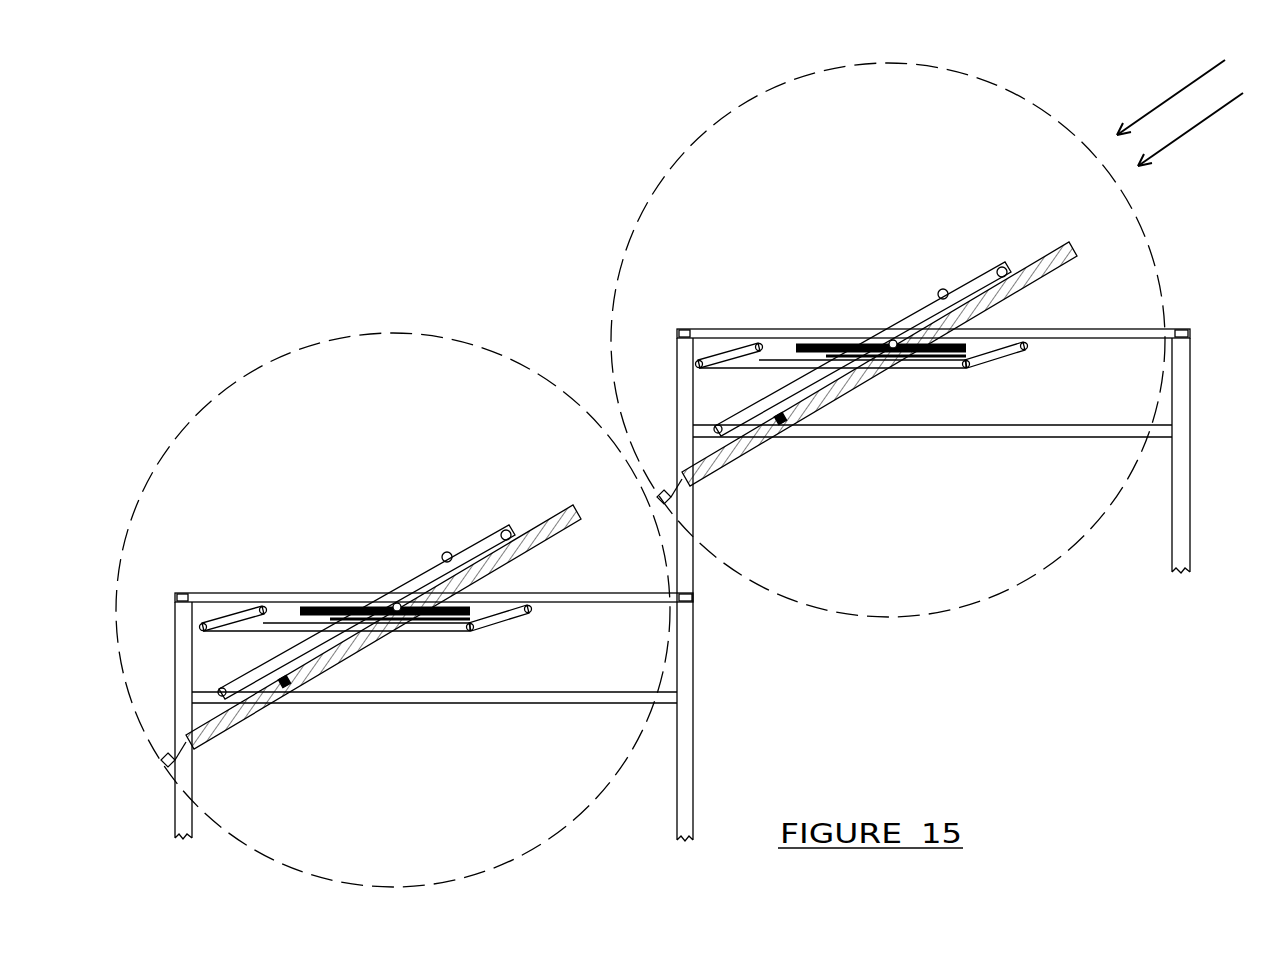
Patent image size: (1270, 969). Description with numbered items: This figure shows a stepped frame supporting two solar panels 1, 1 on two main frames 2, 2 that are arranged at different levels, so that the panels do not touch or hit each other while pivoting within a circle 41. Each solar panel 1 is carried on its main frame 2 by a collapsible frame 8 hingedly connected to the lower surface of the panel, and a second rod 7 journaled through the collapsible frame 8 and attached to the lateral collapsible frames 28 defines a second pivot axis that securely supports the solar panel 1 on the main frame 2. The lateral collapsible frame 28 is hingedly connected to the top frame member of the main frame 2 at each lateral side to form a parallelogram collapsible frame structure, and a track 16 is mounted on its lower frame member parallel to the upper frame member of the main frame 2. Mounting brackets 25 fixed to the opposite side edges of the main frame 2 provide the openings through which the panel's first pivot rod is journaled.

The solar panel 1 is at (224, 738).
The main frame 2 is at (556, 592).
The second rod 7 is at (300, 636).
The collapsible frame 8 is at (455, 551).
The track 16 is at (421, 624).
The mounting bracket 25 is at (396, 602).
The lateral collapsible frame 28 is at (498, 625).
The circle 41 is at (563, 832).